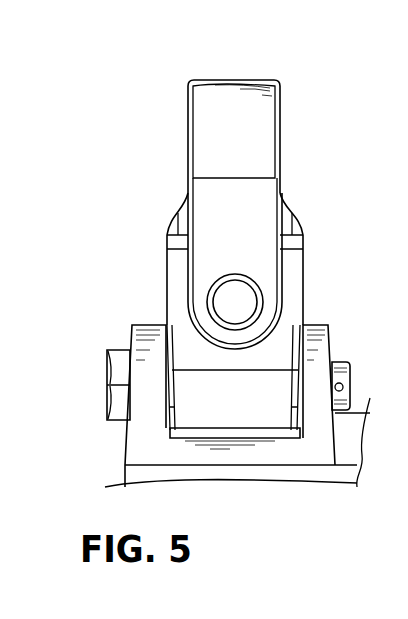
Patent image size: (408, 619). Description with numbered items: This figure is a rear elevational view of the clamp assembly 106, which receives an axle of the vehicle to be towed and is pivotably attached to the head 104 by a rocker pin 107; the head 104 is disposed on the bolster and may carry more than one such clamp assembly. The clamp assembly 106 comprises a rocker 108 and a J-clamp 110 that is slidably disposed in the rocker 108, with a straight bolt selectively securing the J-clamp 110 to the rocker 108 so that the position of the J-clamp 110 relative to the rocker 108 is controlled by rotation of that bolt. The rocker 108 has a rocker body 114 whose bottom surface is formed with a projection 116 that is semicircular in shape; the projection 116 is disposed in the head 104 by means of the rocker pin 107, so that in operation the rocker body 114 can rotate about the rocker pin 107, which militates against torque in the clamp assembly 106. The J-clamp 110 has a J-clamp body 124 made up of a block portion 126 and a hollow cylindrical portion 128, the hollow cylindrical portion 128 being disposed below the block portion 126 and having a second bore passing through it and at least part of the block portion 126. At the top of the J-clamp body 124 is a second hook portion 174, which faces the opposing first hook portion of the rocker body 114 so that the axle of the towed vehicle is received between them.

The head 104 is at (135, 447).
The clamp assembly 106 is at (305, 70).
The rocker pin 107 is at (108, 386).
The rocker 108 is at (302, 265).
The J-clamp 110 is at (203, 194).
The rocker body 114 is at (276, 317).
The projection 116 is at (270, 410).
The J-clamp body 124 is at (208, 215).
The block portion 126 is at (262, 191).
The hollow cylindrical portion 128 is at (273, 299).
The second hook portion 174 is at (235, 87).